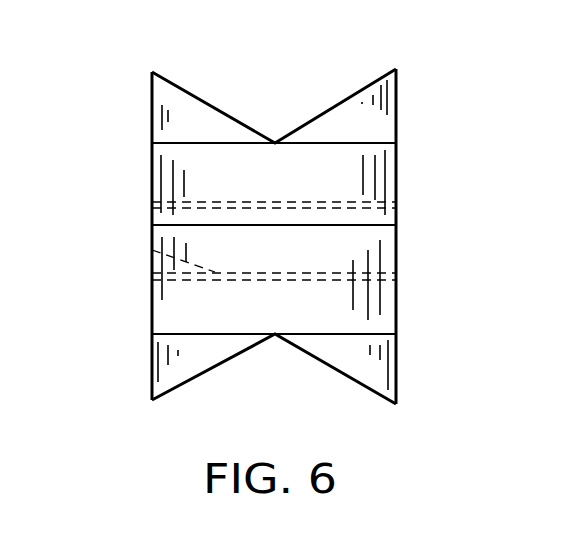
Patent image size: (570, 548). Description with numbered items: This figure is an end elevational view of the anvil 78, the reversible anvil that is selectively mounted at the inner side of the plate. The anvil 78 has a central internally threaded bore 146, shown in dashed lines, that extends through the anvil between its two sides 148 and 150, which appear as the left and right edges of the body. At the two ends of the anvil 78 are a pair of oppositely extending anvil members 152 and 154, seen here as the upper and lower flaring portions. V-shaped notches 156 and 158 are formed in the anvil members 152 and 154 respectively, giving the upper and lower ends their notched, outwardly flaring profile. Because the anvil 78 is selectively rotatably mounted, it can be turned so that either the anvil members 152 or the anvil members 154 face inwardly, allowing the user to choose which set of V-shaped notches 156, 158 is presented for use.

The roller 78 is at (125, 158).
The central internally threaded bore 146 is at (152, 250).
The side of anvil 148 is at (150, 318).
The side of anvil 150 is at (398, 308).
The anvil members 152 is at (160, 102).
The anvil members 154 is at (150, 374).
The V-shaped notch 156 is at (337, 102).
The V-shaped notch 158 is at (221, 367).